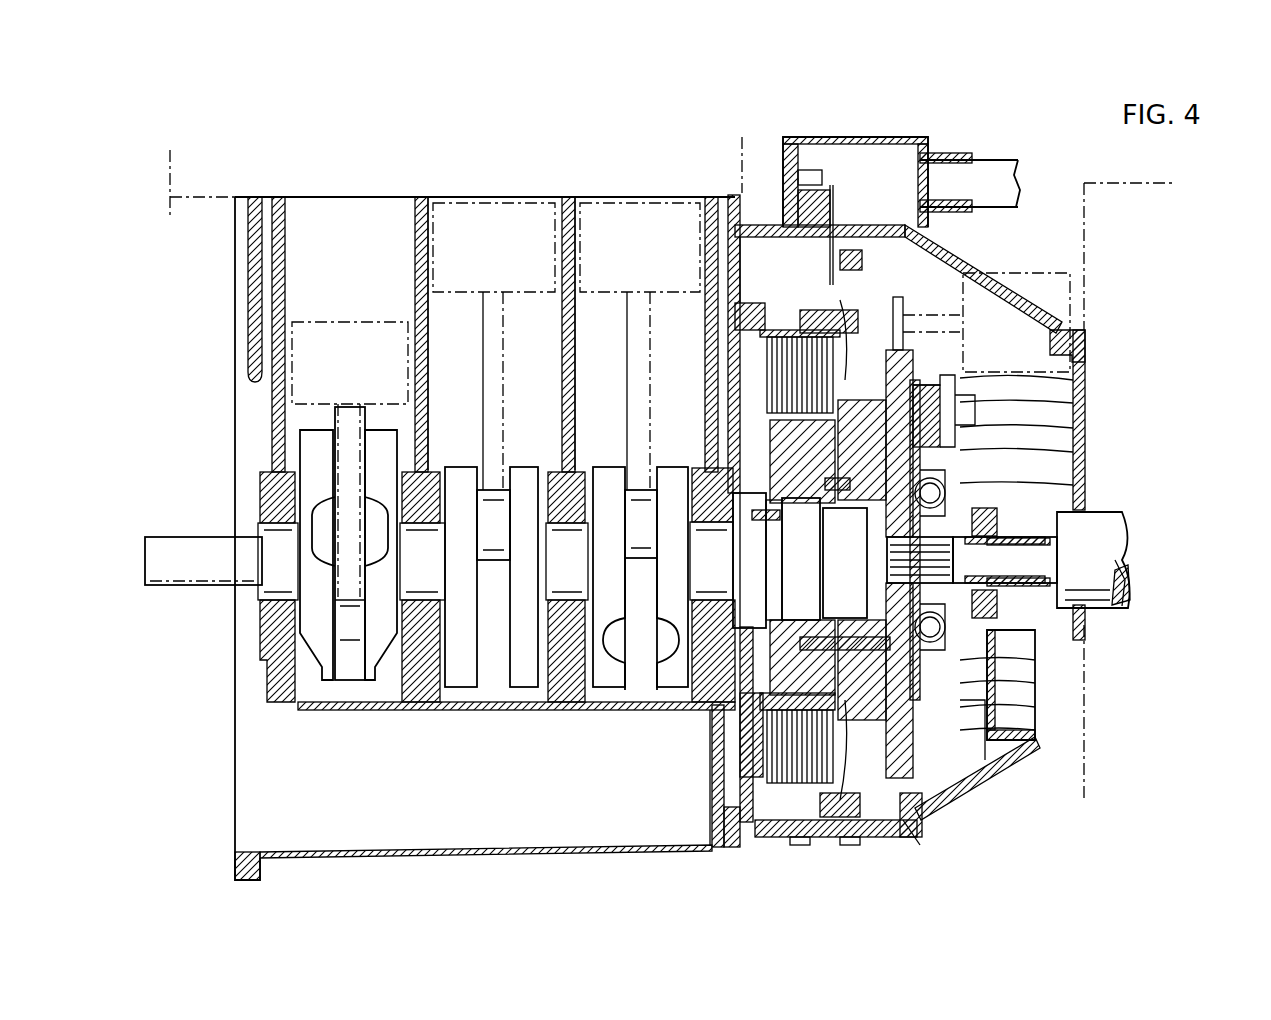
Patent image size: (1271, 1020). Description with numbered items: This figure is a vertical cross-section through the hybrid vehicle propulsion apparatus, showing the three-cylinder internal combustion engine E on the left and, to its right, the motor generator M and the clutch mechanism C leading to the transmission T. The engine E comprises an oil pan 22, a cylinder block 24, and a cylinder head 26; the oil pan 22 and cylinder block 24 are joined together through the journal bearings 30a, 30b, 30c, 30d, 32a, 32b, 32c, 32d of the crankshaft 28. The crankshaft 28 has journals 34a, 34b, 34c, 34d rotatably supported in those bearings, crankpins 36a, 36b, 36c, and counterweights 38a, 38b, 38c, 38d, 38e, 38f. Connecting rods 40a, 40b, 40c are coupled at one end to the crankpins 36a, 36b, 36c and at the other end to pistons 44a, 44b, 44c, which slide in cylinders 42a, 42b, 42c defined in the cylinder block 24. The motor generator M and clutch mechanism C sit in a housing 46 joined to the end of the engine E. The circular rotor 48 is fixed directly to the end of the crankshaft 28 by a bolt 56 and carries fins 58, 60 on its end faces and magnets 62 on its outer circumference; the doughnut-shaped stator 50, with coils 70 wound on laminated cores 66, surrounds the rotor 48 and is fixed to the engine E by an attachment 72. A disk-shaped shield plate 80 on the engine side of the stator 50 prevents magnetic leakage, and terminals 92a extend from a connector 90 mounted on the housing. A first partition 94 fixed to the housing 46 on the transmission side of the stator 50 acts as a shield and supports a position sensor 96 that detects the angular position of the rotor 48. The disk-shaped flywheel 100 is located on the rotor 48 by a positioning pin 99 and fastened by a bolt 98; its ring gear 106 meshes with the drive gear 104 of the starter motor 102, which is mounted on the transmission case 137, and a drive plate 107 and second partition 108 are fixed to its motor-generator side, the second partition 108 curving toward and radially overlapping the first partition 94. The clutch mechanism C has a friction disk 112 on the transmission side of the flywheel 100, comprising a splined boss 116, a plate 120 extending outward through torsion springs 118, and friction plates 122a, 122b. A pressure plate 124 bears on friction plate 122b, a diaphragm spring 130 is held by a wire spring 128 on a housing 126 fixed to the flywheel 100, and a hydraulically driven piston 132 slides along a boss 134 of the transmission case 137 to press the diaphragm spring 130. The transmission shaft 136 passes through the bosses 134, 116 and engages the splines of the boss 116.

The oil pan 22 is at (365, 858).
The cylinder block 24 is at (262, 378).
The cylinder head 26 is at (175, 215).
The crankshaft 28 is at (185, 545).
The journal bearing 30a is at (270, 620).
The journal bearing 30b is at (415, 690).
The journal bearing 30c is at (565, 690).
The journal bearing 30d is at (700, 690).
The journal bearing 32a is at (262, 500).
The journal bearing 32b is at (405, 478).
The journal bearing 32c is at (555, 475).
The journal bearing 32d is at (705, 480).
The journal 34a is at (272, 582).
The journal 34b is at (420, 620).
The journal 34c is at (568, 540).
The journal 34d is at (710, 600).
The crankpin 36a is at (352, 688).
The crankpin 36b is at (495, 688).
The crankpin 36c is at (640, 478).
The counterweight 38a is at (305, 690).
The counterweight 38b is at (380, 690).
The counterweight 38c is at (462, 690).
The counterweight 38d is at (525, 690).
The counterweight 38e is at (610, 690).
The counterweight 38f is at (670, 690).
The connecting rod 40a is at (343, 420).
The connecting rod 40b is at (485, 412).
The connecting rod 40c is at (632, 365).
The cylinder 42a is at (330, 208).
The cylinder 42b is at (448, 208).
The cylinder 42c is at (595, 208).
The piston 44a is at (340, 330).
The piston 44b is at (510, 210).
The piston 44c is at (655, 210).
The housing 46 is at (775, 225).
The rotor 48 is at (770, 450).
The stator 50 is at (785, 322).
The bolt 56 is at (786, 612).
The fin 58 is at (780, 420).
The fin 60 is at (850, 640).
The magnet 62 is at (790, 640).
The core 66 is at (820, 838).
The coil 70 is at (742, 320).
The attachment 72 is at (790, 838).
The shield plate 80 is at (760, 365).
The connector 90 is at (920, 140).
The terminal 92a is at (835, 215).
The first partition 94 is at (845, 300).
The position sensor 96 is at (815, 325).
The bolt 98 is at (1000, 640).
The positioning pin 99 is at (838, 500).
The flywheel 100 is at (930, 790).
The starter motor 102 is at (1055, 272).
The drive gear 104 is at (895, 295).
The ring gear 106 is at (955, 365).
The drive plate 107 is at (880, 340).
The second partition 108 is at (940, 370).
The friction disk 112 is at (1060, 658).
The boss 116 is at (1095, 548).
The torsion spring 118 is at (1075, 478).
The plate 120 is at (1075, 450).
The friction plate 122a is at (1078, 375).
The friction plate 122b is at (1075, 400).
The pressure plate 124 is at (1060, 740).
The housing 126 is at (1075, 427).
The wire spring 128 is at (1060, 710).
The diaphragm spring 130 is at (1060, 686).
The piston 132 is at (1100, 607).
The boss 134 is at (1085, 500).
The shaft 136 is at (1125, 520).
The transmission case 137 is at (993, 270).
The internal combustion engine E is at (222, 859).
The motor generator M is at (775, 865).
The clutch mechanism C is at (996, 754).
The transmission T is at (1160, 183).